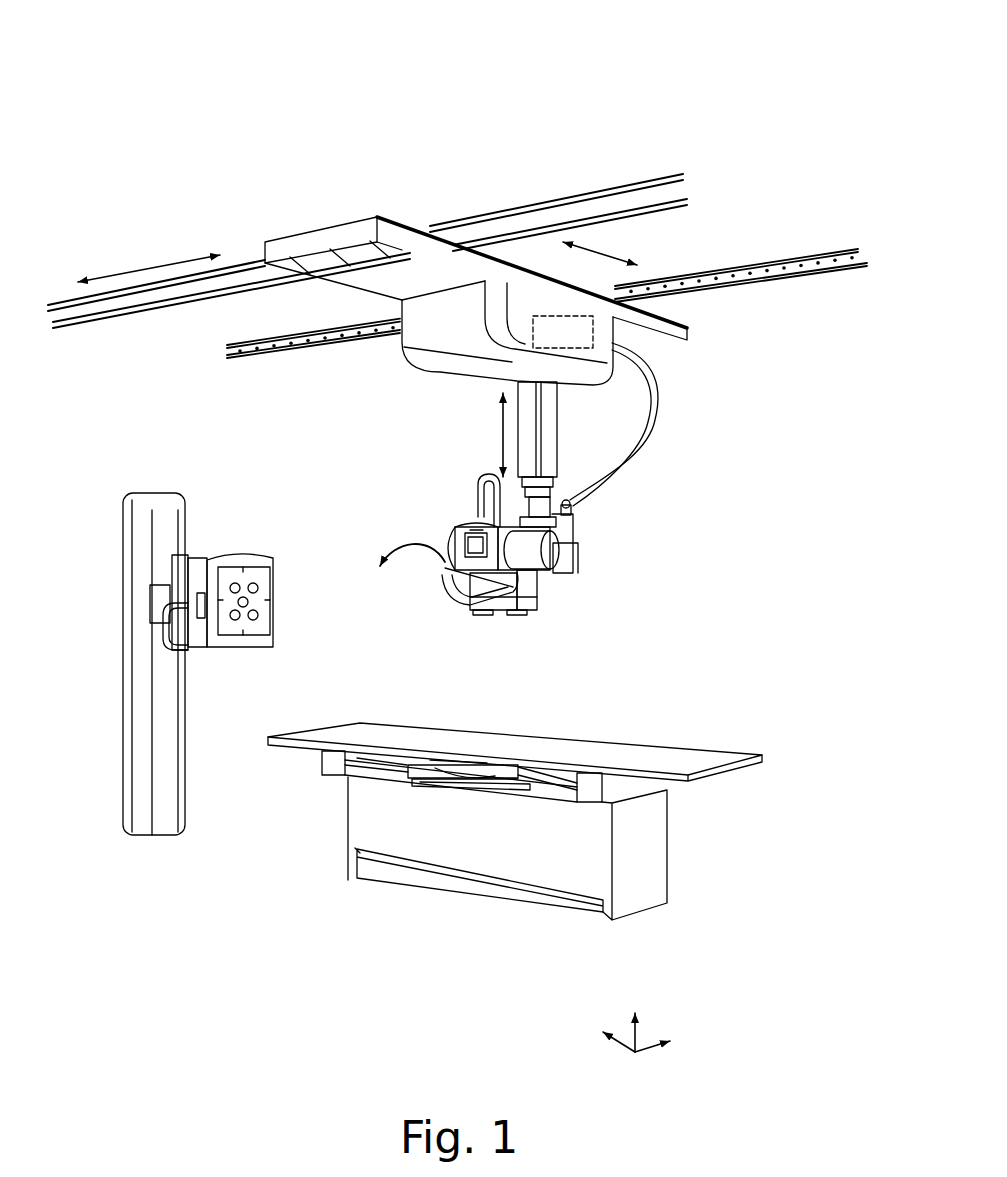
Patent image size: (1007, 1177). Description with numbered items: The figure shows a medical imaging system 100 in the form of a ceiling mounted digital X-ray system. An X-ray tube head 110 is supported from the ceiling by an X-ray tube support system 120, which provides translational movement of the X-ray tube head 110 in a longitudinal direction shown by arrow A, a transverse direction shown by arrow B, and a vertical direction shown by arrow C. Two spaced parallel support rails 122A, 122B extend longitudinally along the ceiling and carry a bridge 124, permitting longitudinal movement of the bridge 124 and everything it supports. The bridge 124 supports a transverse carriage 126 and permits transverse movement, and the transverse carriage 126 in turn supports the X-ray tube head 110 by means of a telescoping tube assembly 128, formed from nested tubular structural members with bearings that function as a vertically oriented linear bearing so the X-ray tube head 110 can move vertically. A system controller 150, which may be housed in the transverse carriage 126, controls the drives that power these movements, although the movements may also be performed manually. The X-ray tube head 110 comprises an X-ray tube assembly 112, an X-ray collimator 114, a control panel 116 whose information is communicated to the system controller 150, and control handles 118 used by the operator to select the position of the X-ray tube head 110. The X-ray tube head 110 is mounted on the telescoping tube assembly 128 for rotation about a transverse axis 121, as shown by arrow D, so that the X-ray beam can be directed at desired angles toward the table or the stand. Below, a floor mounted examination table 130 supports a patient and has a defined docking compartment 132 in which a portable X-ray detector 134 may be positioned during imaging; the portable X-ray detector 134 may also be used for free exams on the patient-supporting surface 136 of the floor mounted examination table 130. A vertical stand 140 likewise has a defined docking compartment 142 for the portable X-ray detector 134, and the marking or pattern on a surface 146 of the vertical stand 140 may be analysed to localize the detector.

The medical imaging system 100 is at (447, 530).
The X-ray tube head 110 is at (537, 568).
The X-ray tube assembly 112 is at (553, 555).
The X-ray collimator 114 is at (537, 597).
The control panel 116 is at (458, 528).
The control handles 118 is at (467, 602).
The X-ray tube support system 120 is at (703, 321).
The transverse axis 121 is at (448, 566).
The support rail 122A is at (83, 326).
The support rail 122B is at (270, 360).
The bridge 124 is at (463, 363).
The transverse carriage 126 is at (593, 363).
The telescoping tube assembly 128 is at (557, 443).
The floor mounted examination table 130 is at (532, 806).
The docking compartment 132 is at (530, 785).
The portable X-ray detector 134 is at (195, 562).
The patient-supporting surface 136 is at (593, 740).
The vertical stand 140 is at (187, 768).
The docking compartment 142 is at (210, 652).
The surface 146 is at (273, 560).
The system controller 150 is at (563, 332).